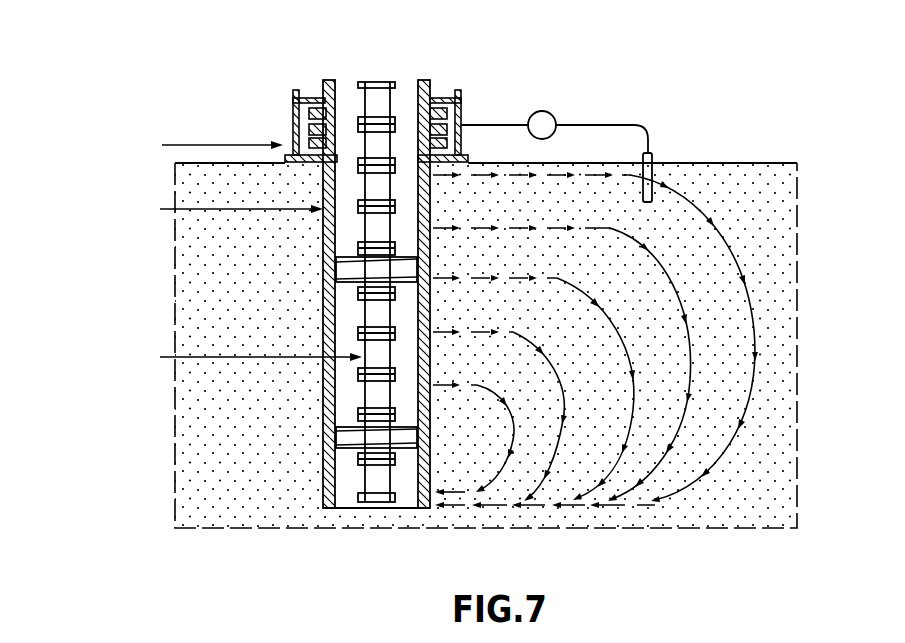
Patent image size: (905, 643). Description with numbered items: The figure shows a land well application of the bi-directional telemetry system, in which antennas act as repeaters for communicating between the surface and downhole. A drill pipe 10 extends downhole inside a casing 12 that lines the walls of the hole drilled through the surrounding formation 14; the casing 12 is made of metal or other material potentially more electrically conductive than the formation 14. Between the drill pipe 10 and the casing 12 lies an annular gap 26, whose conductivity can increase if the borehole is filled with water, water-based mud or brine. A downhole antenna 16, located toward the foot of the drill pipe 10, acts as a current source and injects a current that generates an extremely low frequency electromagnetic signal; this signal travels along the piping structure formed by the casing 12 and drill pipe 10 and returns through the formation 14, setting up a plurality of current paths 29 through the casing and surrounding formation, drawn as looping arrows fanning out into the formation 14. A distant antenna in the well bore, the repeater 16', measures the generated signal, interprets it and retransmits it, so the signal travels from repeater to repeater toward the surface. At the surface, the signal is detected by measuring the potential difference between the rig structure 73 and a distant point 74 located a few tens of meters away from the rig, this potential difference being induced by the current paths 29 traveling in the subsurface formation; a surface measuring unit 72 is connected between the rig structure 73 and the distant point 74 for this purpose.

The drill pipe 10 is at (387, 500).
The casing 12 is at (428, 508).
The formation 14 is at (478, 455).
The downhole antenna 16 is at (248, 440).
The repeater 16' is at (242, 274).
The gap 26 is at (345, 478).
The current paths 29 is at (508, 418).
The surface electrical unit 72 is at (542, 124).
The rig structure 73 is at (471, 98).
The distant point 74 is at (653, 156).